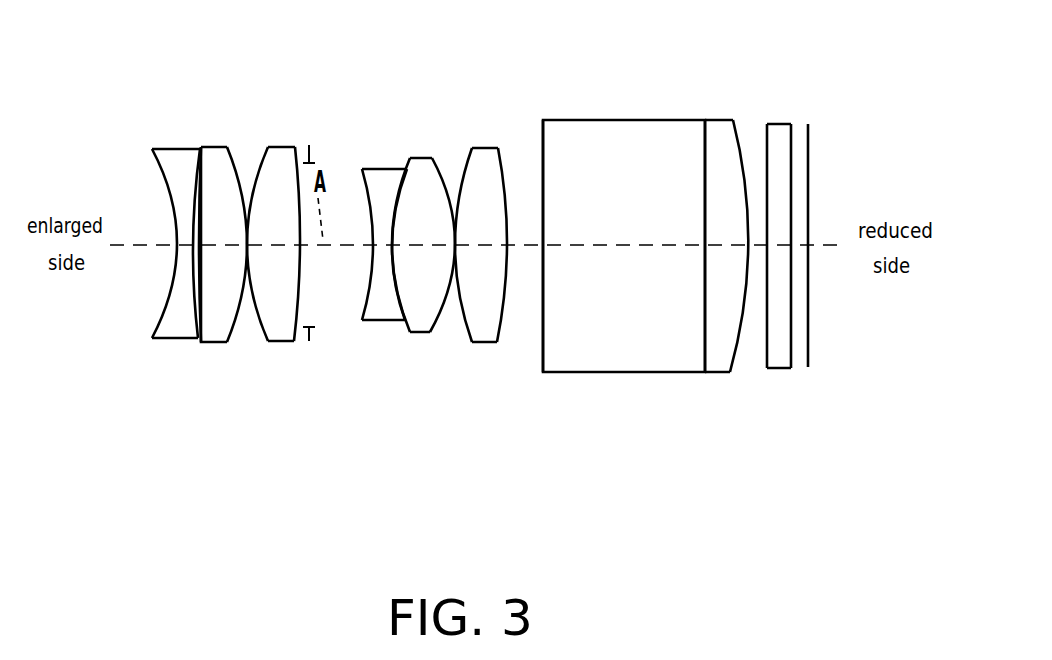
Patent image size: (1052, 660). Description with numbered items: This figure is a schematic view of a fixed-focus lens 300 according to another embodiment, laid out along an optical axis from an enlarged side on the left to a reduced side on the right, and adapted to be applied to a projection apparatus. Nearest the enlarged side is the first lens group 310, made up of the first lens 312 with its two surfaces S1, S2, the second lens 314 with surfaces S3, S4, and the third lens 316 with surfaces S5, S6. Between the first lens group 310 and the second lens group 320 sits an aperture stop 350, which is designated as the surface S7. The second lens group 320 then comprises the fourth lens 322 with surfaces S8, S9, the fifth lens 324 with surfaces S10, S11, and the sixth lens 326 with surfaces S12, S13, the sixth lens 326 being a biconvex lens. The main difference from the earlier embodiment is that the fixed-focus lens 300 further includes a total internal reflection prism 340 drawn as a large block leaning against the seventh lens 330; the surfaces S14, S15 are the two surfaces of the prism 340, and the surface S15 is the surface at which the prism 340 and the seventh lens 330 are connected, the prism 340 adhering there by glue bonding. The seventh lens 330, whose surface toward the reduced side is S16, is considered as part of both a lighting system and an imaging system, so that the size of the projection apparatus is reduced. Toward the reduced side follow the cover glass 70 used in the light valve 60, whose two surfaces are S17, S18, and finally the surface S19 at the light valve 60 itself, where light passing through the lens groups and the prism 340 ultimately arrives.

The fixed-focus lens 300 is at (857, 528).
The first lens group 310 is at (206, 258).
The first lens 312 is at (156, 259).
The second lens 314 is at (220, 249).
The third lens 316 is at (274, 237).
The second lens group 320 is at (427, 263).
The fourth lens 322 is at (364, 259).
The fifth lens 324 is at (423, 238).
The sixth lens 326 is at (488, 255).
The seventh lens 330 is at (706, 248).
The total internal reflection prism 340 is at (618, 245).
The aperture stop 350 is at (320, 247).
The cover glass 70 is at (785, 252).
The light valve 60 is at (837, 267).
The surface S1 is at (151, 166).
The surface S2 is at (196, 160).
The surface S3 is at (205, 162).
The surface S4 is at (235, 160).
The surface S5 is at (265, 157).
The surface S6 is at (297, 150).
The surface S7 is at (309, 150).
The surface S8 is at (360, 181).
The surface S9 is at (392, 186).
The surface S10 is at (414, 172).
The surface S11 is at (441, 163).
The surface S12 is at (466, 153).
The surface S13 is at (504, 155).
The surface S14 is at (540, 142).
The surface S15 is at (702, 142).
The surface S16 is at (742, 128).
The surface S17 is at (764, 140).
The surface S18 is at (796, 130).
The surface S19 is at (810, 185).